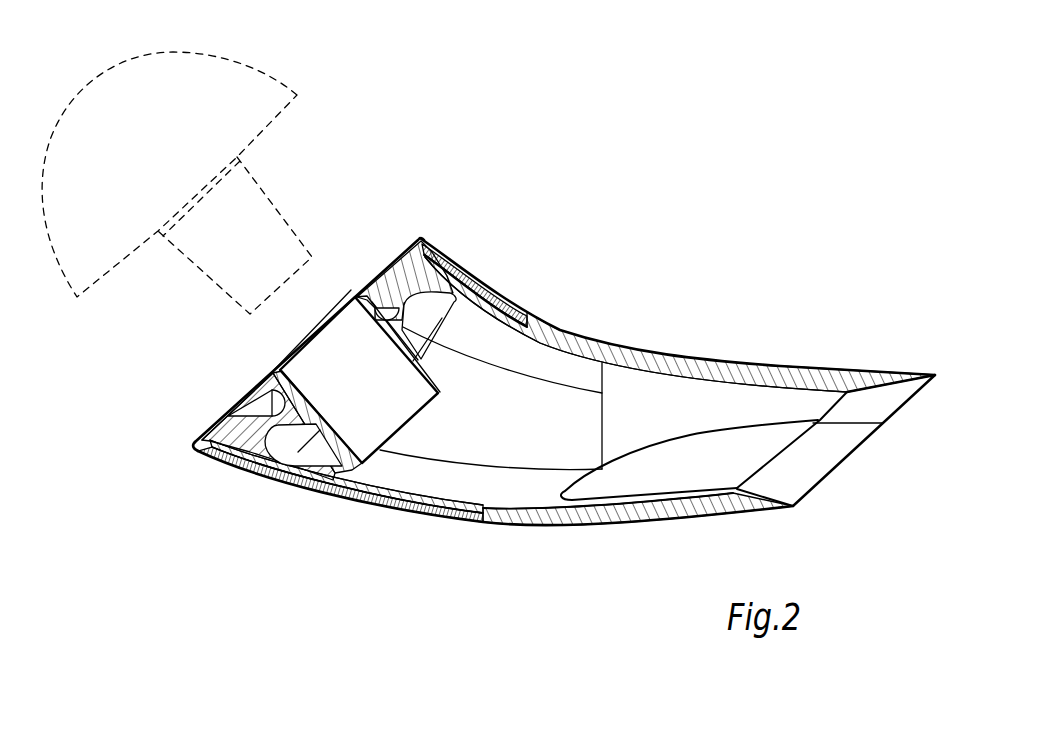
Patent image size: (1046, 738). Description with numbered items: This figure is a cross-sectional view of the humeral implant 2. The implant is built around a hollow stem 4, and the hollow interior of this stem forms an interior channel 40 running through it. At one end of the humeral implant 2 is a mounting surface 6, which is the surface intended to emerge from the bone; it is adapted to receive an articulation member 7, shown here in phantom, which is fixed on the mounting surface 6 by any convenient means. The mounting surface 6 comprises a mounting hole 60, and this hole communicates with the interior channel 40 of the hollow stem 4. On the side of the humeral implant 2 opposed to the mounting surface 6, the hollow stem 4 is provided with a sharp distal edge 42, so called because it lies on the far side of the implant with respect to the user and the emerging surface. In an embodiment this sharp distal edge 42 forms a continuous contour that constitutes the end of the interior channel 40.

The humeral implant 2 is at (663, 278).
The hollow stem 4 is at (760, 368).
The mounting surface 6 is at (394, 254).
The articulation member 7 is at (175, 51).
The interior channel 40 is at (491, 398).
The sharp distal edge 42 is at (938, 380).
The mounting hole 60 is at (337, 380).